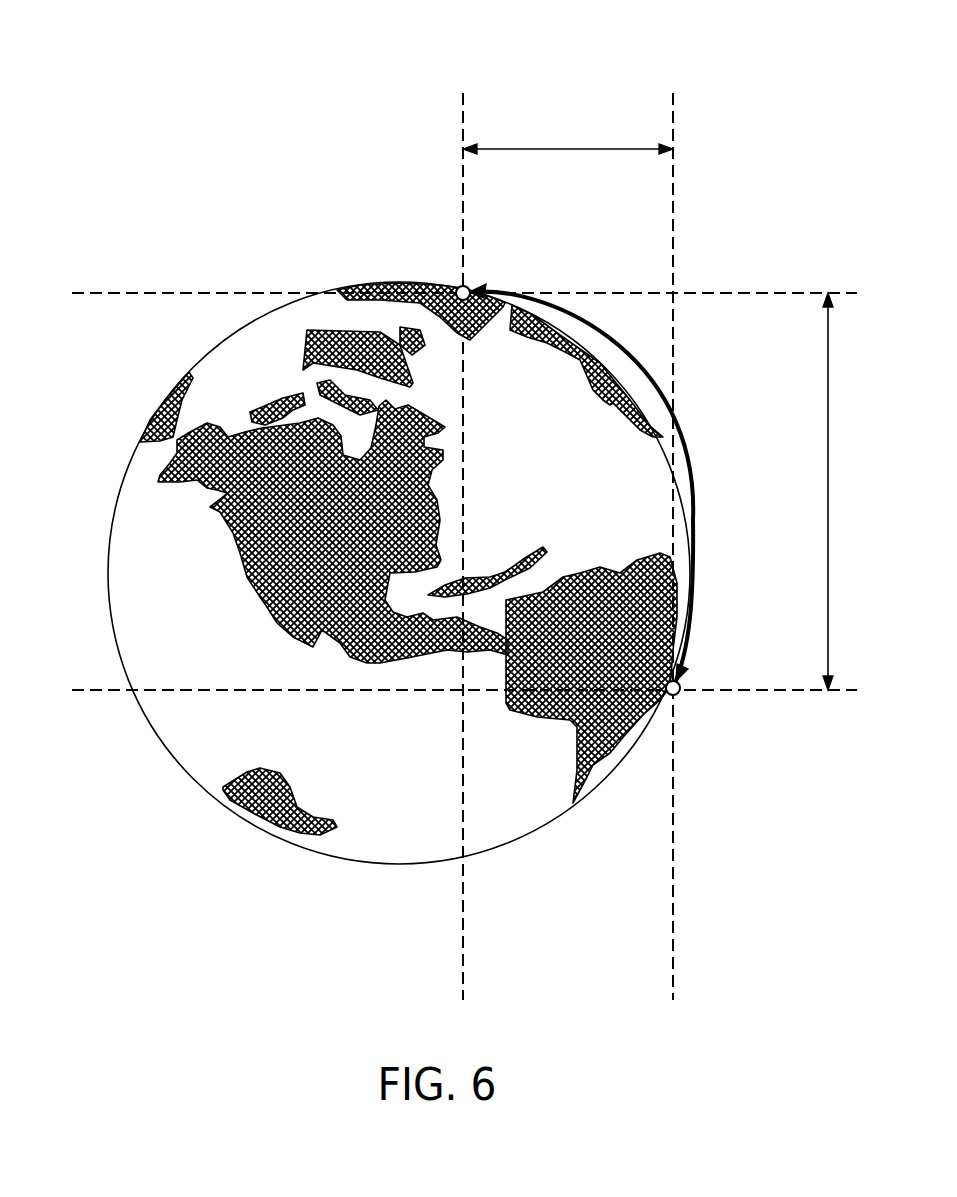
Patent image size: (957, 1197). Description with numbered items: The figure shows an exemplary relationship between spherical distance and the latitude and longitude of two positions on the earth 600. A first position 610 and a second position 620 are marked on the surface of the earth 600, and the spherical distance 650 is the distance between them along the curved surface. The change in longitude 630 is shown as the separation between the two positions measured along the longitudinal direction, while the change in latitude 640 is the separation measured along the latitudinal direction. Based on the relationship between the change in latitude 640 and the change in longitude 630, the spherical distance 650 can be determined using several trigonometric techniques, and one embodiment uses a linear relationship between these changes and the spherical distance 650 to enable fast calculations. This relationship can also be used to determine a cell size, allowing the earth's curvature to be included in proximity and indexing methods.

The earth 600 is at (165, 811).
The first position 610 is at (457, 289).
The second position 620 is at (680, 694).
The change in longitude 630 is at (559, 147).
The change in latitude 640 is at (827, 573).
The spherical distance 650 is at (665, 367).